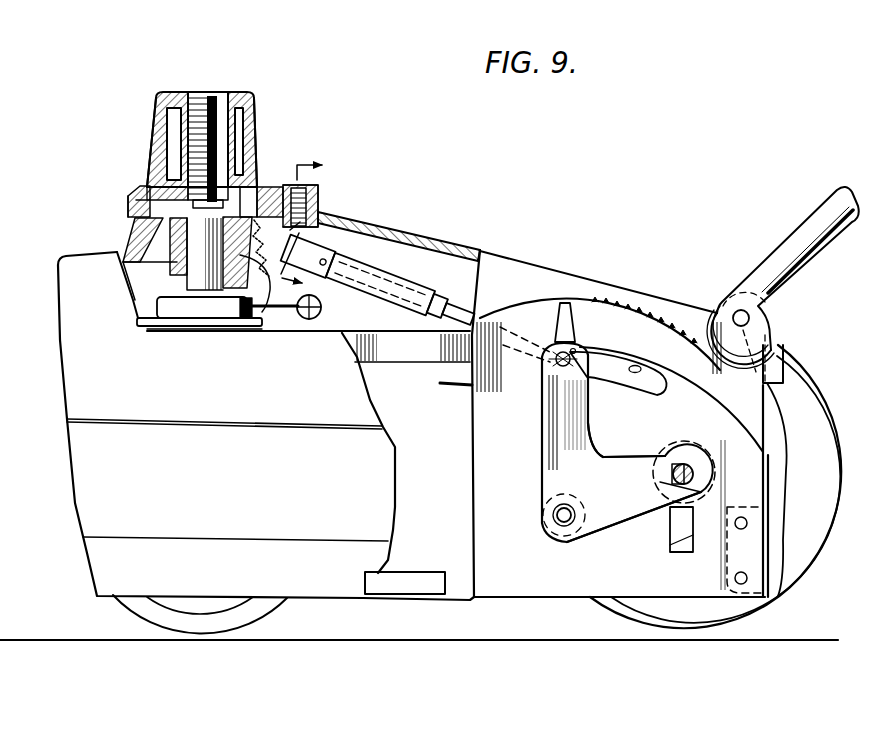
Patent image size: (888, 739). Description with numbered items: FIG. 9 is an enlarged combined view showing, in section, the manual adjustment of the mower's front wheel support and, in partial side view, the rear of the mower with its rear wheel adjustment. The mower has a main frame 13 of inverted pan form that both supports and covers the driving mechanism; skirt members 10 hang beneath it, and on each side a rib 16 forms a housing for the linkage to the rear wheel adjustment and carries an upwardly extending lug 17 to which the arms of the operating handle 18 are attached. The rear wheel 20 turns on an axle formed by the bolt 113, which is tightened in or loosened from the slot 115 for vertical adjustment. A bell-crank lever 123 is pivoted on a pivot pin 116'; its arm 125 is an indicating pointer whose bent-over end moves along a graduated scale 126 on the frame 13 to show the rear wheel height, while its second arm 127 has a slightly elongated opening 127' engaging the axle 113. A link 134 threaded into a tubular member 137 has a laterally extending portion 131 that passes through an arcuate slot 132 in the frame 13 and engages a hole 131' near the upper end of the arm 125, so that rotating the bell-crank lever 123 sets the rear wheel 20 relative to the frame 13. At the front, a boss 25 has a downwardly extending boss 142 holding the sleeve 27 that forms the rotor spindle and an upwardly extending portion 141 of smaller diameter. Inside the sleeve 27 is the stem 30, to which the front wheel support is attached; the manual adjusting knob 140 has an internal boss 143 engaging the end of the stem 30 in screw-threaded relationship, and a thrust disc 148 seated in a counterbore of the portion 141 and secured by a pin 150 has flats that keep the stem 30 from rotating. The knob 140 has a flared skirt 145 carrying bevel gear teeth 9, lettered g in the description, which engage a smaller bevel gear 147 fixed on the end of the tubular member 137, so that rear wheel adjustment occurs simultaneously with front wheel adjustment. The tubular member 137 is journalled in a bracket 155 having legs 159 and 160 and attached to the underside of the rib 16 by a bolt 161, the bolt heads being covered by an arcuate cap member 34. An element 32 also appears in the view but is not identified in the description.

The hand control handle 9 is at (148, 199).
The skirt member 10 is at (298, 224).
The main frame 13 is at (78, 260).
The rib 16 is at (428, 228).
The lug 17 is at (717, 313).
The operating handle 18 is at (792, 235).
The rear wheel 20 is at (830, 530).
The boss 25 is at (130, 233).
The sleeve 27 is at (197, 240).
The stem 30 is at (216, 96).
The clamp block 32 is at (316, 209).
The arcuate cap member 34 is at (284, 187).
The axle bolt 113 is at (690, 470).
The slot 115 is at (693, 537).
The pivot pin 116' is at (541, 513).
The bell-crank lever 123 is at (597, 430).
The arm 125 is at (552, 398).
The graduated scale 126 is at (637, 303).
The second arm 127 is at (641, 481).
The elongated opening 127' is at (647, 493).
The laterally extending portion 131 is at (588, 334).
The hole 131' is at (618, 375).
The arcuate slot 132 is at (641, 368).
The link 134 is at (503, 327).
The tubular member 137 is at (395, 288).
The manual adjusting knob 140 is at (253, 113).
The upwardly extending portion 141 is at (242, 192).
The downwardly extending boss 142 is at (177, 264).
The internal boss 143 is at (232, 148).
The flared skirt 145 is at (128, 203).
The bevel gear 147 is at (266, 255).
The thrust disc 148 is at (230, 193).
The pin 150 is at (152, 195).
The bracket member 155 is at (337, 237).
The leg 159 is at (248, 312).
The leg 160 is at (321, 307).
The bolt 161 is at (308, 183).